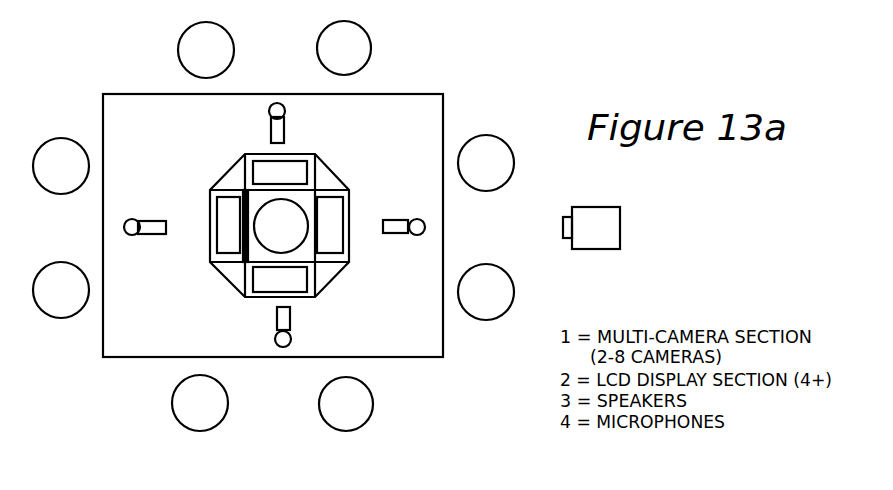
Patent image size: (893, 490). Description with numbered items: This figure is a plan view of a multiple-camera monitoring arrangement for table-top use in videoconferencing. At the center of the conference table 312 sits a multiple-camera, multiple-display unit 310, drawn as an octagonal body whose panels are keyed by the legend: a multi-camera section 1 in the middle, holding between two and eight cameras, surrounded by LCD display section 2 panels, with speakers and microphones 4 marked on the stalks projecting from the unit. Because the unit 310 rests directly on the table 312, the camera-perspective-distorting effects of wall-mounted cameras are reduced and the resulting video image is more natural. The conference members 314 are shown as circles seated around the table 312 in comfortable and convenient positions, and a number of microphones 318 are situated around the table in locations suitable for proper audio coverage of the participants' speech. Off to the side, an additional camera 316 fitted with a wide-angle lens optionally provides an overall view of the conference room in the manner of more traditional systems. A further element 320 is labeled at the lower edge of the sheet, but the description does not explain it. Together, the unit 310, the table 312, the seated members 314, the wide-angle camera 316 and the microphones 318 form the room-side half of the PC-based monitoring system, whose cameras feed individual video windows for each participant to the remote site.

The multiple-camera, multiple-display unit 310 is at (261, 274).
The conference table 312 is at (134, 94).
The conference members 314 is at (227, 410).
The additional camera 316 is at (620, 226).
The microphones 318 is at (98, 301).
The display / remote system 320 is at (737, 488).
The multi-camera section 1 is at (281, 226).
The LCD display section 2 is at (280, 279).
The microphone 4 is at (145, 219).